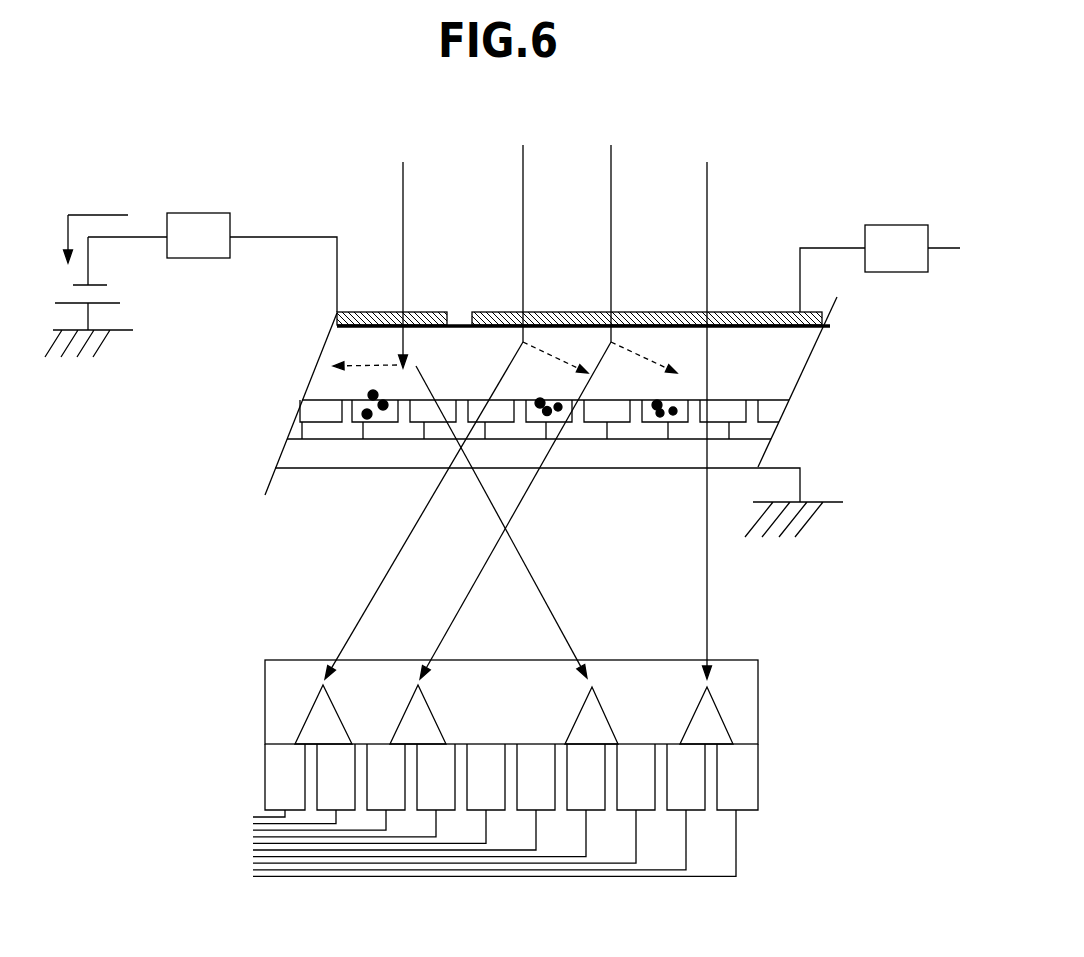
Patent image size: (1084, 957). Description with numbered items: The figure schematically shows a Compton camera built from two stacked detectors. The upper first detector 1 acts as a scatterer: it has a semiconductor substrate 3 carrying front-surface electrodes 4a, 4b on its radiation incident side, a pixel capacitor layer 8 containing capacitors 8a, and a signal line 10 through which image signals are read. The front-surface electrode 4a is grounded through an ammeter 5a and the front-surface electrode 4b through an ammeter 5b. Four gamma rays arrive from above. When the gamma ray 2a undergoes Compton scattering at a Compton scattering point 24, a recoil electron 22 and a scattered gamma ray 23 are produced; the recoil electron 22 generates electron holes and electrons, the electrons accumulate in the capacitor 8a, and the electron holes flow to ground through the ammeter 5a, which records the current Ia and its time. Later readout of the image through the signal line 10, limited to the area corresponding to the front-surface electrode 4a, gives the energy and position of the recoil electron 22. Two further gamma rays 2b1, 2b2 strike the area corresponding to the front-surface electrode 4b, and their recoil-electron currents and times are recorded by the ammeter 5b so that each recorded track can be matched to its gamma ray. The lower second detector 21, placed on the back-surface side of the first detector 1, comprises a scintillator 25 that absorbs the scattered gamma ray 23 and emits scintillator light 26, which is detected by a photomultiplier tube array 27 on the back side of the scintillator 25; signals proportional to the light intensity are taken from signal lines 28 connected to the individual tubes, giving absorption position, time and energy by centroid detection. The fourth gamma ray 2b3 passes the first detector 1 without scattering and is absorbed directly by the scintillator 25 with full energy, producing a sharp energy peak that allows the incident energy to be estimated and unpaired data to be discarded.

The current Ia is at (86, 230).
The first detector 1 is at (202, 297).
The gamma ray 2a is at (418, 265).
The gamma ray 2b1 is at (456, 412).
The gamma ray 2b2 is at (548, 412).
The gamma ray 2b3 is at (727, 420).
The semiconductor substrate 3 is at (318, 362).
The front-surface electrode 4a is at (333, 322).
The front-surface electrode 4b is at (760, 310).
The ammeter 5a is at (200, 213).
The ammeter 5b is at (897, 225).
The capacitor layer 8 is at (305, 412).
The capacitor 8a is at (380, 418).
The signal line 10 is at (295, 447).
The second detector 21 is at (148, 658).
The recoil electron 22 is at (372, 360).
The scattered gamma ray 23 is at (535, 578).
The Compton scattering point 24 is at (417, 355).
The scintillator 25 is at (278, 706).
The scintillator light 26 is at (638, 680).
The photomultiplier tube array 27 is at (278, 778).
The signal lines 28 is at (235, 813).